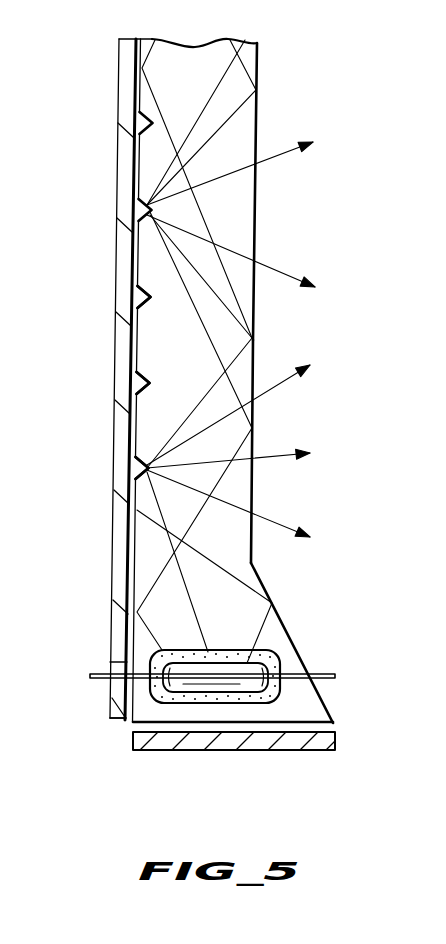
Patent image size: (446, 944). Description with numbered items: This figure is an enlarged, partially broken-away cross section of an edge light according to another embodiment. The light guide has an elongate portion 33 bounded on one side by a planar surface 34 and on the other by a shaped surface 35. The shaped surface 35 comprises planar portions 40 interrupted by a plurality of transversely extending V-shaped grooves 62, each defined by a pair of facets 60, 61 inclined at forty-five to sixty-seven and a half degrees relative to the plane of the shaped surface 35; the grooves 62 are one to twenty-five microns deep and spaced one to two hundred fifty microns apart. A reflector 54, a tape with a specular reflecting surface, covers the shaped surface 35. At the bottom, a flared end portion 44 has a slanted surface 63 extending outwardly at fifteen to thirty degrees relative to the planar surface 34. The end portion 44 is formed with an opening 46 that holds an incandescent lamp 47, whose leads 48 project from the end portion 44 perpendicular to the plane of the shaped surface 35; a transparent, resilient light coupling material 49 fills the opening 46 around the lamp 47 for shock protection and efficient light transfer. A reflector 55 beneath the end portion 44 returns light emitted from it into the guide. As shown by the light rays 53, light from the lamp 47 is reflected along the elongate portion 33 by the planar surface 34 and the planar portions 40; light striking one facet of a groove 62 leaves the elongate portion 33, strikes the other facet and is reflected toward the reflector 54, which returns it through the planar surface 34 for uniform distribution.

The planar portions 40 is at (140, 92).
The reflector 54 is at (125, 168).
The V-shaped grooves 62 is at (140, 297).
The shaped surface 35 is at (124, 354).
The facet 61 is at (140, 390).
The facet 60 is at (140, 473).
The light rays 53 is at (255, 219).
The planar surface 34 is at (254, 312).
The elongate portion 33 is at (254, 493).
The slanted surface 63 is at (283, 617).
The end portion 44 is at (310, 707).
The leads 48 is at (96, 673).
The light coupling material 49 is at (143, 718).
The incandescent lamp 47 is at (191, 681).
The opening 46 is at (223, 703).
The reflector 55 is at (288, 737).